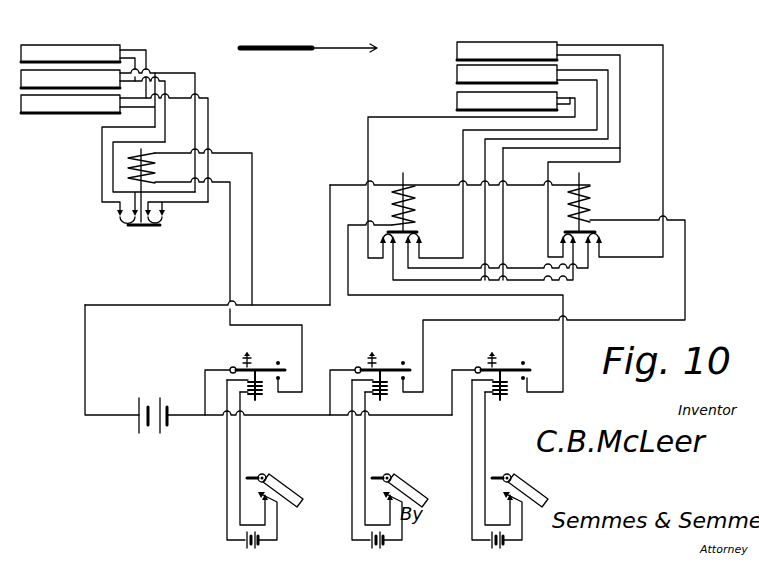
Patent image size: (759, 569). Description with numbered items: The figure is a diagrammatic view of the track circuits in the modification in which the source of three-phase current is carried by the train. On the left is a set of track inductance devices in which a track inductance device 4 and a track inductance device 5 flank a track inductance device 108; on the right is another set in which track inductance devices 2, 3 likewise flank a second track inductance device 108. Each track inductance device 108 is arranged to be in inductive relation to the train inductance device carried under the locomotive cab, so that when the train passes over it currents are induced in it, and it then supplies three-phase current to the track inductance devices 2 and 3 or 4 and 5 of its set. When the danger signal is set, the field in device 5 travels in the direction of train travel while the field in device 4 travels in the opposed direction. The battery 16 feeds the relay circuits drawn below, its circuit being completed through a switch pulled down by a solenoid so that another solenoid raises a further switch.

The track inductance device 2 is at (477, 98).
The track inductance device 3 is at (467, 48).
The track inductance device 4 is at (105, 50).
The track inductance device 5 is at (67, 107).
The track inductance device 108 is at (38, 78).
The battery 16 is at (139, 428).